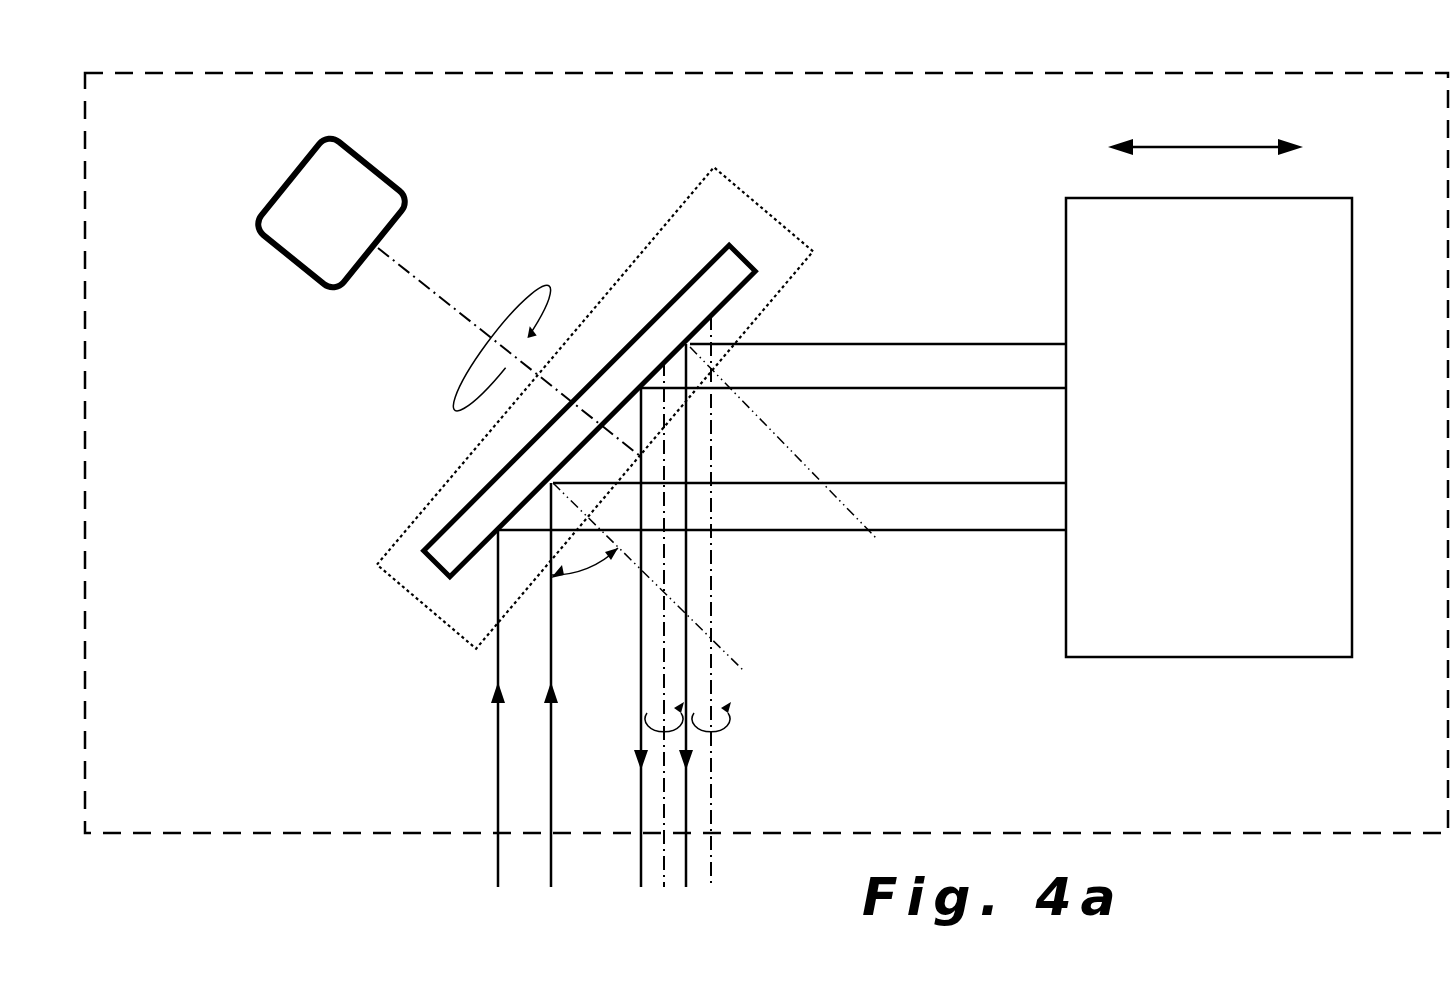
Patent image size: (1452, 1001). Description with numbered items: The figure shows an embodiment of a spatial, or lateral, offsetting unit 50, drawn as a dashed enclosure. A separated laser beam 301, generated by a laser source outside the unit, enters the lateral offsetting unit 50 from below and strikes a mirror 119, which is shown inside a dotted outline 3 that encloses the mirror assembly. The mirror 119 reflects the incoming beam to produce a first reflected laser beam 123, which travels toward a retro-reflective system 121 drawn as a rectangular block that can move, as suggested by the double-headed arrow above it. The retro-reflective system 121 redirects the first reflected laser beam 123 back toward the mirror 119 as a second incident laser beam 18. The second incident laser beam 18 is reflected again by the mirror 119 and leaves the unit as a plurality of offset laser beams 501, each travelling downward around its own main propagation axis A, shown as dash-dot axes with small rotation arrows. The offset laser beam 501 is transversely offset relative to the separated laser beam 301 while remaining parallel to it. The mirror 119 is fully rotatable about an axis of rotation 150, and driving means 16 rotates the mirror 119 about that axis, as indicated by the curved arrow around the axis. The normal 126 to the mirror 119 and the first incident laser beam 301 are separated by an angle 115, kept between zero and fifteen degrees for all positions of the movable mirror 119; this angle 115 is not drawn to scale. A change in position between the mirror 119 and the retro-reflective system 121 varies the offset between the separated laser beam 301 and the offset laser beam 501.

The spatial offsetting unit 50 is at (600, 74).
The driving means 16 is at (322, 196).
The axis of rotation 150 is at (440, 293).
The rotatable mirror unit 3 is at (403, 585).
The mirror 119 is at (463, 526).
The second incident laser beam 18 is at (930, 388).
The first reflected laser beam 123 is at (1010, 530).
The retro-reflective system 121 is at (1353, 288).
The normal 126 is at (882, 537).
The angle 115 is at (560, 582).
The separated laser beam 301 is at (551, 762).
The offset laser beam 501 is at (687, 825).
The main propagation axis A is at (712, 790).